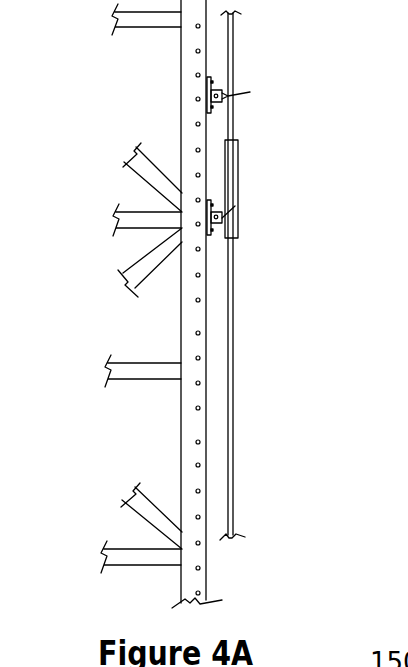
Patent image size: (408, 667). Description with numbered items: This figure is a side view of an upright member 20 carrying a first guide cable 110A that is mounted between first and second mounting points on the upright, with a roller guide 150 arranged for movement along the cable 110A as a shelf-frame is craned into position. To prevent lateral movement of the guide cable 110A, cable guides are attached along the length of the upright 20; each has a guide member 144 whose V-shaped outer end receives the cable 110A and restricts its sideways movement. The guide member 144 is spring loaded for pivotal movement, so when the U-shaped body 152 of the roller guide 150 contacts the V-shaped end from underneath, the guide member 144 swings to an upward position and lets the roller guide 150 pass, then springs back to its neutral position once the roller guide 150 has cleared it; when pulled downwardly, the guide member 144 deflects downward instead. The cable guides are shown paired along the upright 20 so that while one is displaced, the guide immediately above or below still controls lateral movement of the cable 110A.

The upright member 20 is at (197, 578).
The first guide cable 110A is at (296, 275).
The guide member 144 is at (236, 93).
The roller guide 150 is at (298, 168).
The U-shaped body 152 is at (237, 141).